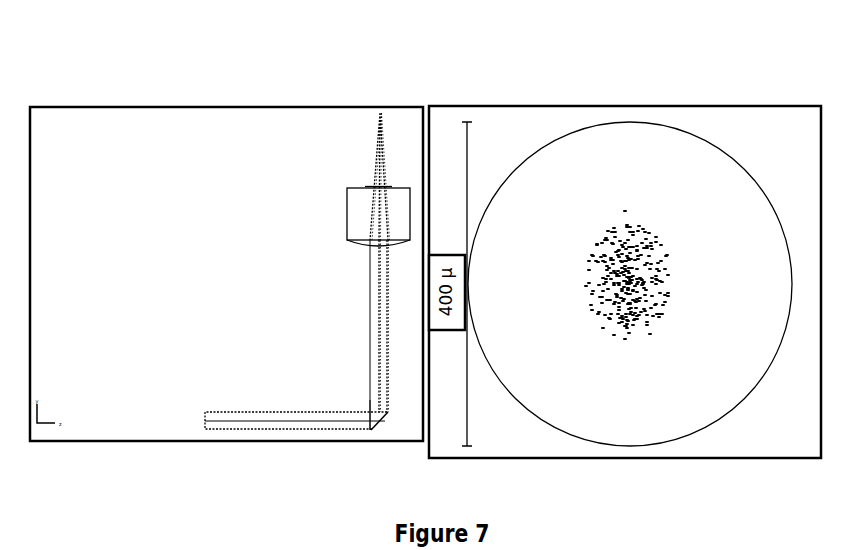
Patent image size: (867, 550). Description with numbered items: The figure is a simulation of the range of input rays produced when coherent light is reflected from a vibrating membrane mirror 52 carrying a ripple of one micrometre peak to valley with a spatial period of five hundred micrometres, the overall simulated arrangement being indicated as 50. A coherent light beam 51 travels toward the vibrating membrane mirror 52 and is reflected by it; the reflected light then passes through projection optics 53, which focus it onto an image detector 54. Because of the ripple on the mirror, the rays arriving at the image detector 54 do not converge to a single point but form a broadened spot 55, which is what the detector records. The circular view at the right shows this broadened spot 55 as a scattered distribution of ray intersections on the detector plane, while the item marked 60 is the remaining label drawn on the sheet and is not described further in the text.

The laser processing system 50 is at (262, 88).
The input laser beam 51 is at (223, 430).
The turning mirror 52 is at (373, 428).
The focusing lens 53 is at (350, 222).
The focal point 54 is at (380, 113).
The focused spot distribution 55 is at (593, 309).
The sheet numeral 60 is at (218, 542).